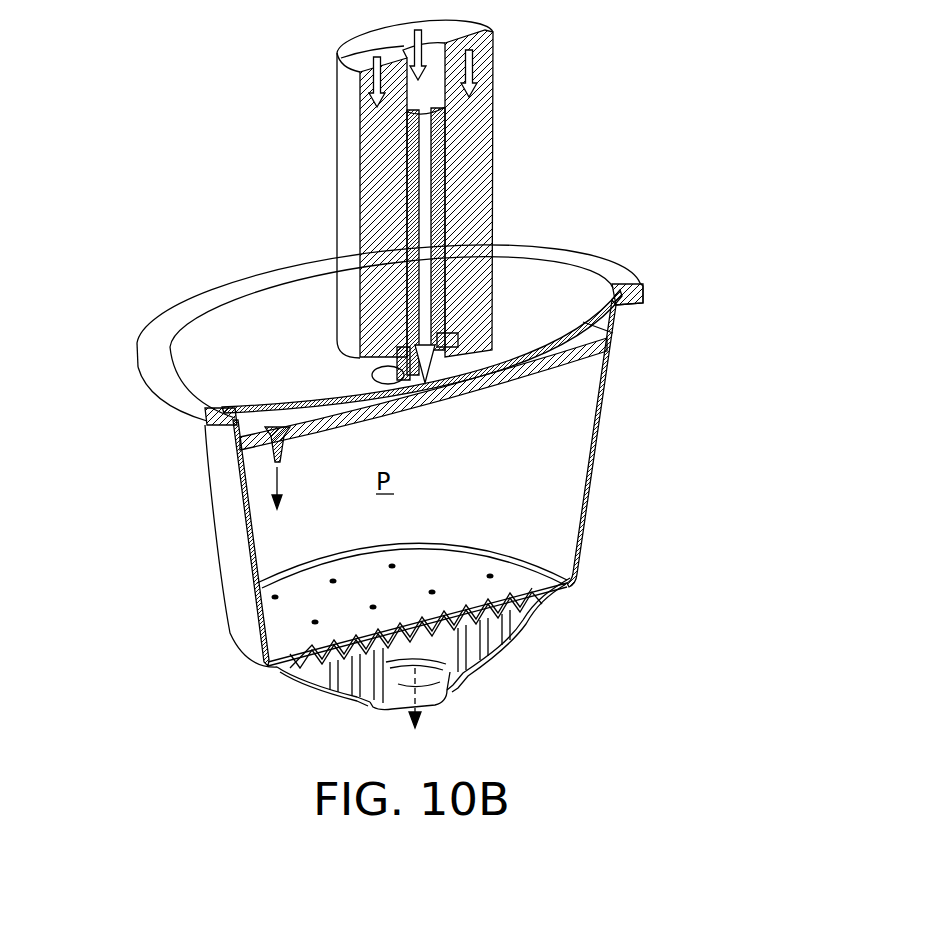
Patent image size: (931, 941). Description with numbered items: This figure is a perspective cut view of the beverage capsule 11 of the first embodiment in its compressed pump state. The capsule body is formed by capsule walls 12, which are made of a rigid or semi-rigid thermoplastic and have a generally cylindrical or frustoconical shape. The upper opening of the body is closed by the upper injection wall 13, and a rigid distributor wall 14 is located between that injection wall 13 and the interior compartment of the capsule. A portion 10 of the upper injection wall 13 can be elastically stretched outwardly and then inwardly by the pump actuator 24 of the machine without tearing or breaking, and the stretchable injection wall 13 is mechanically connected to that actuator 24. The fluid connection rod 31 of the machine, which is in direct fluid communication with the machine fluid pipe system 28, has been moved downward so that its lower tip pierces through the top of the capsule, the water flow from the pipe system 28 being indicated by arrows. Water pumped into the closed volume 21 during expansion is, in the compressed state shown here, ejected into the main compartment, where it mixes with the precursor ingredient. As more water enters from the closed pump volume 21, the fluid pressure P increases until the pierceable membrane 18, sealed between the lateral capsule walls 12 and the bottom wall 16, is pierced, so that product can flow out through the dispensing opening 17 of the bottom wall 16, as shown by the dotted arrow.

The portion of the capsule upper injection wall 10 is at (248, 288).
The beverage capsule 11 is at (586, 546).
The capsule walls 12 is at (600, 423).
The upper injection wall 13 is at (162, 332).
The rigid distributor wall 14 is at (596, 333).
The bottom wall 16 is at (500, 643).
The dispensing opening 17 is at (430, 696).
The pierceable membrane 18 is at (287, 642).
The closed volume 21 is at (243, 437).
The pump actuator 24 is at (370, 182).
The fluid pipe system 28 is at (420, 90).
The fluid connection rod 31 is at (438, 173).